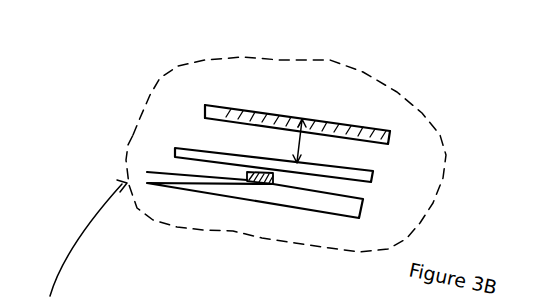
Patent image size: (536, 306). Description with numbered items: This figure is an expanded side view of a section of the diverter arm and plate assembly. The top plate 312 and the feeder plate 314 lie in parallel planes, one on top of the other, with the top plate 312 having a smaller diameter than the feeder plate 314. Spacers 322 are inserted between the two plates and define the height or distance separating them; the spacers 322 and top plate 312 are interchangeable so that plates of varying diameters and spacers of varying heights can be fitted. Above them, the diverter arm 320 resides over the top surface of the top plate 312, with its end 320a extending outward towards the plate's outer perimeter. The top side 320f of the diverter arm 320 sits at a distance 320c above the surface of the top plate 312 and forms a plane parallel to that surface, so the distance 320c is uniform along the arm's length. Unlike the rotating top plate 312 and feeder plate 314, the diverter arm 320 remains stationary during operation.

The diverter arm 320 is at (388, 144).
The end of diverter arm 320a is at (198, 115).
The top side of diverter arm 320f is at (251, 106).
The distance 320c is at (300, 146).
The top plate 312 is at (371, 182).
The feeder plate 314 is at (350, 217).
The spacers 322 is at (276, 184).